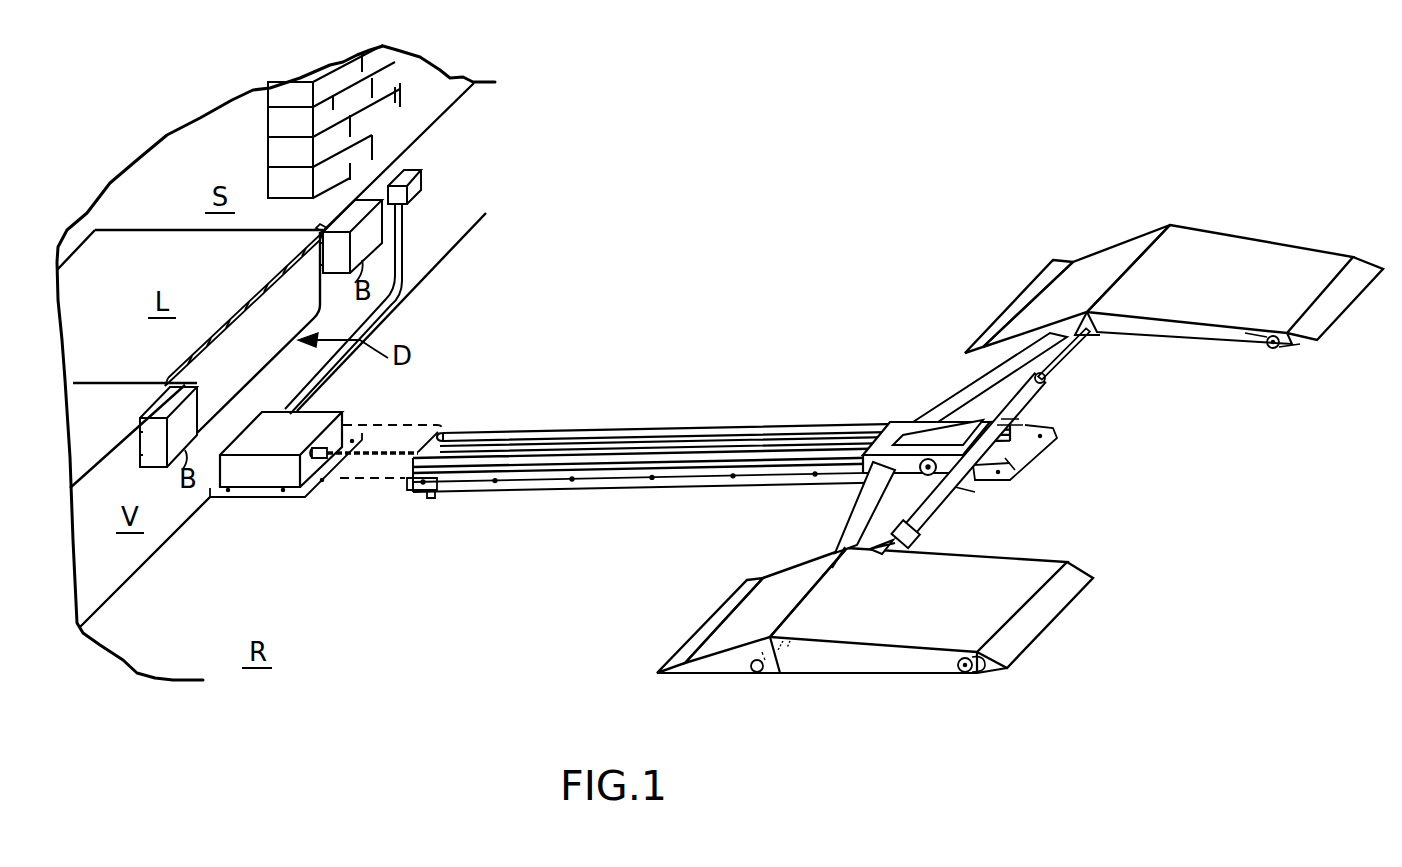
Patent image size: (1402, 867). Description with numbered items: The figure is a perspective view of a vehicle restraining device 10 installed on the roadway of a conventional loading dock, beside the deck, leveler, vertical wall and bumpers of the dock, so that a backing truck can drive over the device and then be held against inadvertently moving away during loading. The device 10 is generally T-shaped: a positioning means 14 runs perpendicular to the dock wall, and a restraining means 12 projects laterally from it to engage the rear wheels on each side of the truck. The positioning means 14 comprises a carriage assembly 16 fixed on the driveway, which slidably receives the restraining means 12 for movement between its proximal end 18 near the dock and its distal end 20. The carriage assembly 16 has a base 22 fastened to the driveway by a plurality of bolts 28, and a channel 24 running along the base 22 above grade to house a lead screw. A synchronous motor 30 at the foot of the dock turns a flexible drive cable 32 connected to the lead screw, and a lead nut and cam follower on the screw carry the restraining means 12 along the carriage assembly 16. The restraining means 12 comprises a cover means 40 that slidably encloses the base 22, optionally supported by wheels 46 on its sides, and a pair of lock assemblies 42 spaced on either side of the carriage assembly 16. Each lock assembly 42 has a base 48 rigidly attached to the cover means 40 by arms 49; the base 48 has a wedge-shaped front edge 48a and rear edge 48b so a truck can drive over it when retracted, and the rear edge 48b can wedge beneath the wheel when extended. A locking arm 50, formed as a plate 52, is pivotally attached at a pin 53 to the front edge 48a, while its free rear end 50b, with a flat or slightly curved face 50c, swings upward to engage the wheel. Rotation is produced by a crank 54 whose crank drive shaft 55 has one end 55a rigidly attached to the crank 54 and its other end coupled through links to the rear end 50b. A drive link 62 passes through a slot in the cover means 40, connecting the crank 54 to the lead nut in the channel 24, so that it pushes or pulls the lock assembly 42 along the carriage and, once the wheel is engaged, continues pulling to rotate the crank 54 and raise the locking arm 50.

The vehicle restraining device 10 is at (795, 232).
The restraining means 12 is at (1130, 480).
The positioning means 14 is at (700, 475).
The carriage assembly 16 is at (637, 491).
The proximal end 18 is at (430, 490).
The distal end 20 is at (1045, 437).
The base 22 is at (640, 431).
The channel 24 is at (695, 444).
The bolts 28 is at (497, 485).
The synchronous motor 30 is at (283, 478).
The flexible drive cable 32 is at (375, 457).
The cover means 40 is at (892, 425).
The lock assembly 42 is at (999, 465).
The wheels 46 is at (932, 476).
The base 48 is at (1090, 258).
The front edge 48a is at (1315, 342).
The rear edge 48b is at (1020, 300).
The arms 49 is at (957, 392).
The locking arm 50 is at (1205, 372).
The rear end 50b is at (847, 630).
The face 50c is at (762, 672).
The plate 52 is at (1240, 250).
The pin 53 is at (1267, 348).
The crank 54 is at (1030, 410).
The crank drive shaft 55 is at (1048, 386).
The end 55a is at (1010, 465).
The drive link 62 is at (935, 432).